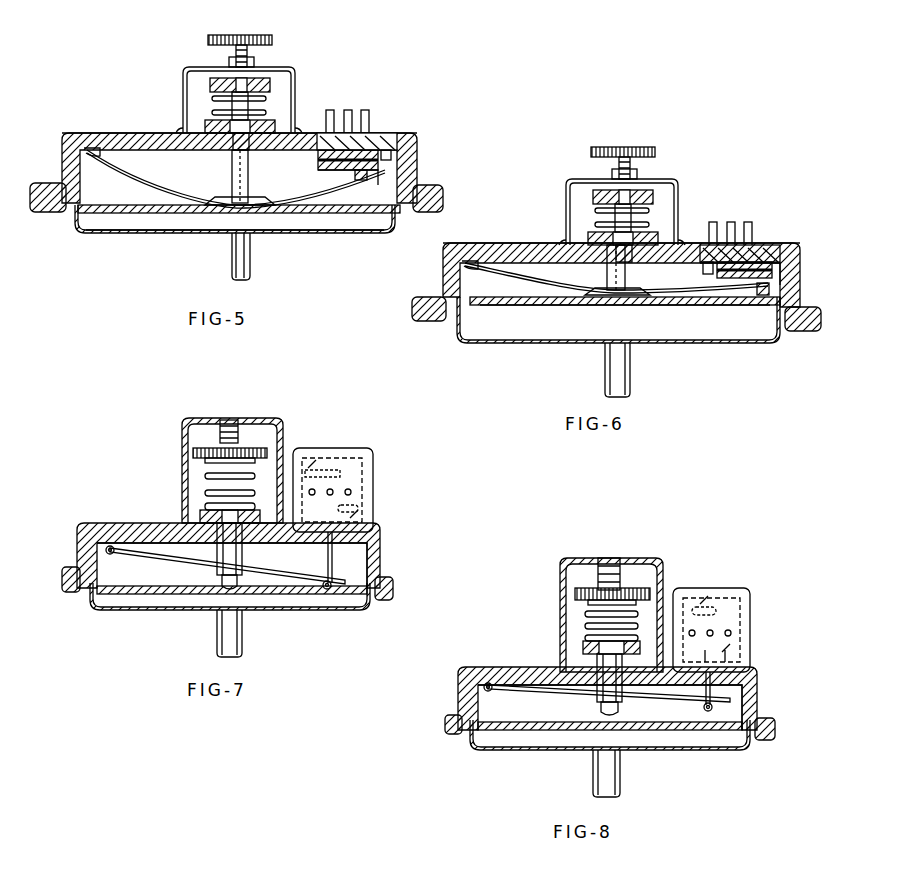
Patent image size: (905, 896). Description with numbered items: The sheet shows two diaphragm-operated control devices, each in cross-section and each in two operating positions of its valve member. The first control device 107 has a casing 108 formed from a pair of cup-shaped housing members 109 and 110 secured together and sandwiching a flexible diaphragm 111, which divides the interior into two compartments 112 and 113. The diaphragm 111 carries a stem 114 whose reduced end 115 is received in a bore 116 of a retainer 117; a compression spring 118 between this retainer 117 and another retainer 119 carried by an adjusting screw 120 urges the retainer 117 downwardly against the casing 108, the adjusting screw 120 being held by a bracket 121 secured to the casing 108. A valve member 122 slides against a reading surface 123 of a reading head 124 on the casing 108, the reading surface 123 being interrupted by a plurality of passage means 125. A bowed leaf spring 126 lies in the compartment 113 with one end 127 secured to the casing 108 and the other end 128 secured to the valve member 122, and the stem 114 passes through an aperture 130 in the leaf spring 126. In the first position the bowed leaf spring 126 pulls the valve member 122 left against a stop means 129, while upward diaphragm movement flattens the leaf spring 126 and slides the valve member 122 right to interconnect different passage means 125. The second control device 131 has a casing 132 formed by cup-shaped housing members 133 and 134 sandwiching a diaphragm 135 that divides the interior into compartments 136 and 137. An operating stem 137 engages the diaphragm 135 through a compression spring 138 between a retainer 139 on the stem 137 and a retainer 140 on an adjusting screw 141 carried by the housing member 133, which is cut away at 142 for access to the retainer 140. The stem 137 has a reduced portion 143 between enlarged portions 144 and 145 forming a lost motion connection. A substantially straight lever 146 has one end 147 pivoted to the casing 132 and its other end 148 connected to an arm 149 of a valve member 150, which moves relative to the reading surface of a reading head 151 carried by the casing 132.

In FIG. 5, the control device 107 is at (337, 52).
In FIG. 6, the control device 107 is at (731, 170).
In FIG. 5, the casing 108 is at (401, 150).
In FIG. 6, the casing 108 is at (784, 264).
In FIG. 5, the cup-shaped housing member 109 is at (400, 177).
In FIG. 6, the cup-shaped housing member 109 is at (446, 277).
In FIG. 5, the cup-shaped housing member 110 is at (386, 225).
In FIG. 6, the cup-shaped housing member 110 is at (500, 343).
In FIG. 5, the flexible diaphragm 111 is at (305, 231).
In FIG. 6, the flexible diaphragm 111 is at (526, 306).
In FIG. 5, the compartment 112 is at (350, 233).
In FIG. 6, the compartment 112 is at (675, 345).
In FIG. 5, the compartment 113 is at (405, 198).
In FIG. 6, the compartment 113 is at (505, 270).
In FIG. 5, the stem 114 is at (249, 170).
In FIG. 6, the stem 114 is at (612, 274).
In FIG. 5, the reduced end 115 is at (232, 138).
In FIG. 5, the bore 116 is at (265, 112).
In FIG. 5, the retainer 117 is at (210, 124).
In FIG. 6, the retainer 117 is at (594, 222).
In FIG. 5, the compression spring 118 is at (265, 98).
In FIG. 6, the compression spring 118 is at (587, 196).
In FIG. 5, the retainer 119 is at (262, 83).
In FIG. 6, the retainer 119 is at (598, 177).
In FIG. 5, the adjusting screw 120 is at (250, 54).
In FIG. 6, the adjusting screw 120 is at (645, 163).
In FIG. 5, the bracket 121 is at (189, 68).
In FIG. 6, the bracket 121 is at (644, 207).
In FIG. 5, the valve member 122 is at (386, 150).
In FIG. 6, the valve member 122 is at (755, 240).
In FIG. 5, the reading surface 123 is at (391, 150).
In FIG. 6, the reading surface 123 is at (699, 238).
In FIG. 5, the reading head 124 is at (378, 148).
In FIG. 6, the reading head 124 is at (740, 228).
In FIG. 5, the passage means 125 is at (363, 128).
In FIG. 6, the passage means 125 is at (750, 220).
In FIG. 5, the bowed leaf spring 126 is at (175, 213).
In FIG. 6, the bowed leaf spring 126 is at (594, 300).
In FIG. 5, the end of leaf spring 127 is at (95, 162).
In FIG. 6, the end of leaf spring 127 is at (490, 270).
In FIG. 5, the end of leaf spring 128 is at (362, 173).
In FIG. 6, the end of leaf spring 128 is at (772, 288).
In FIG. 5, the stop means 129 is at (318, 172).
In FIG. 6, the stop means 129 is at (700, 270).
In FIG. 5, the aperture 130 is at (236, 200).
In FIG. 7, the control device 131 is at (336, 418).
In FIG. 8, the control device 131 is at (680, 538).
In FIG. 7, the casing 132 is at (382, 537).
In FIG. 8, the casing 132 is at (517, 666).
In FIG. 7, the cup-shaped housing member 133 is at (378, 578).
In FIG. 8, the cup-shaped housing member 133 is at (460, 678).
In FIG. 7, the cup-shaped housing member 134 is at (356, 606).
In FIG. 8, the cup-shaped housing member 134 is at (478, 750).
In FIG. 7, the diaphragm 135 is at (294, 598).
In FIG. 8, the diaphragm 135 is at (672, 733).
In FIG. 7, the compartment 136 is at (285, 611).
In FIG. 8, the compartment 136 is at (552, 742).
In FIG. 7, the operating stem 137 is at (370, 560).
In FIG. 8, the operating stem 137 is at (592, 649).
In FIG. 7, the compression spring 138 is at (258, 477).
In FIG. 8, the compression spring 138 is at (588, 614).
In FIG. 7, the retainer 139 is at (203, 508).
In FIG. 8, the retainer 139 is at (588, 628).
In FIG. 7, the retainer 140 is at (194, 454).
In FIG. 8, the retainer 140 is at (578, 593).
In FIG. 7, the adjusting screw 141 is at (238, 438).
In FIG. 8, the adjusting screw 141 is at (611, 565).
In FIG. 7, the cut-away 142 is at (196, 417).
In FIG. 8, the cut-away 142 is at (573, 562).
In FIG. 7, the reduced portion 143 is at (218, 567).
In FIG. 8, the reduced portion 143 is at (598, 695).
In FIG. 7, the enlarged portion 144 is at (202, 527).
In FIG. 8, the enlarged portion 144 is at (597, 663).
In FIG. 7, the enlarged portion 145 is at (228, 590).
In FIG. 8, the enlarged portion 145 is at (606, 716).
In FIG. 7, the lever 146 is at (155, 557).
In FIG. 8, the lever 146 is at (665, 698).
In FIG. 7, the end of lever 147 is at (111, 556).
In FIG. 8, the end of lever 147 is at (490, 682).
In FIG. 7, the end of lever 148 is at (340, 584).
In FIG. 8, the end of lever 148 is at (722, 703).
In FIG. 7, the arm 149 is at (328, 560).
In FIG. 8, the arm 149 is at (740, 684).
In FIG. 7, the valve member 150 is at (346, 481).
In FIG. 8, the valve member 150 is at (730, 600).
In FIG. 7, the reading head 151 is at (350, 466).
In FIG. 8, the reading head 151 is at (712, 590).